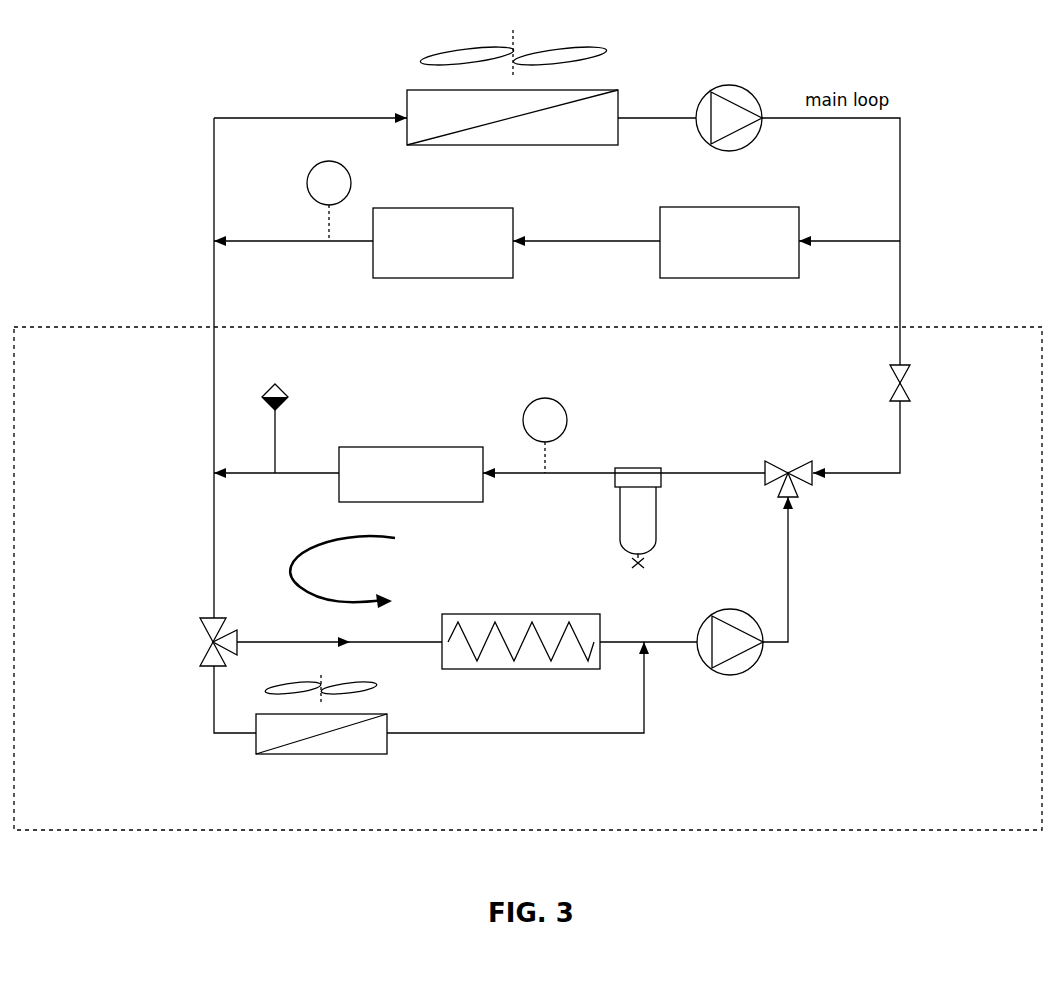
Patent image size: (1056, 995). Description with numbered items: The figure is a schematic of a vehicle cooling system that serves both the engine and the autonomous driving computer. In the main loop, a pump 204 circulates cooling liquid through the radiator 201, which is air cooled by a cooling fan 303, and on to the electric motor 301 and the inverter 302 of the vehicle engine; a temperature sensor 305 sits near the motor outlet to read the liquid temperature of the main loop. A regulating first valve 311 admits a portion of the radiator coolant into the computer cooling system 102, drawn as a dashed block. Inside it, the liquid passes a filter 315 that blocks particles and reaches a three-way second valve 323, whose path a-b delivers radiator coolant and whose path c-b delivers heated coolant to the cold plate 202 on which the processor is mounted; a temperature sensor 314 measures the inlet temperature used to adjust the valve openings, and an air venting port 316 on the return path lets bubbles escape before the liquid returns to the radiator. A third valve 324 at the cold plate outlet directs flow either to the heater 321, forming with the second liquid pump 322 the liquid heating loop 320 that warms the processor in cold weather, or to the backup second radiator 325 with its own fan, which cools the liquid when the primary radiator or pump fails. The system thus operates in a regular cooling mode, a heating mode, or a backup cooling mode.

The computer cooling system 102 is at (969, 815).
The radiator 201 is at (581, 175).
The cold plate 202 is at (390, 447).
The pump 204 is at (751, 48).
The electric motor 301 is at (503, 278).
The inverter 302 is at (727, 207).
The cooling fan 303 is at (579, 25).
The temperature sensor 305 is at (315, 174).
The first valve 311 is at (984, 456).
The temperature sensor 314 is at (563, 403).
The filter 315 is at (603, 564).
The air venting port 316 is at (358, 381).
The liquid heating loop 320 is at (366, 582).
The heater 321 is at (591, 704).
The second liquid pump 322 is at (749, 744).
The second valve 323 is at (801, 417).
The third valve 324 is at (121, 684).
The second radiator 325 is at (329, 837).